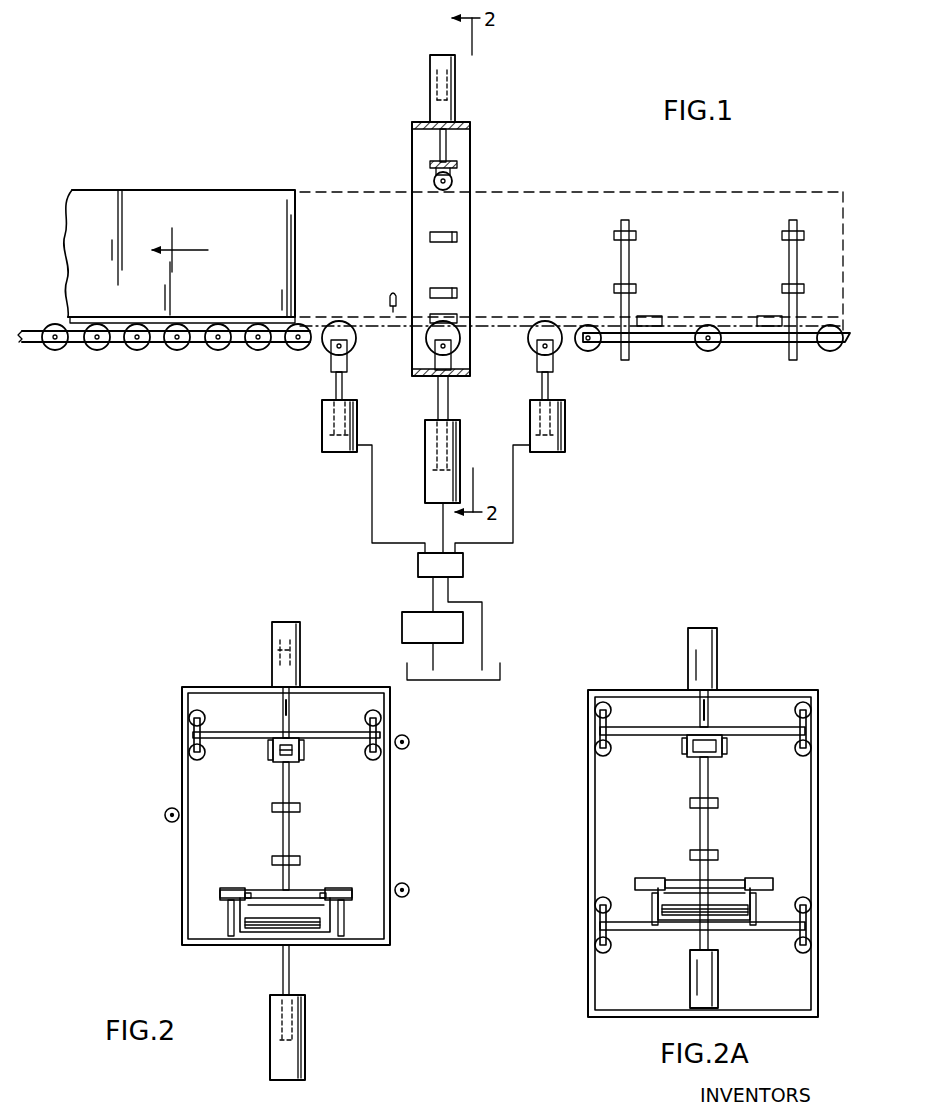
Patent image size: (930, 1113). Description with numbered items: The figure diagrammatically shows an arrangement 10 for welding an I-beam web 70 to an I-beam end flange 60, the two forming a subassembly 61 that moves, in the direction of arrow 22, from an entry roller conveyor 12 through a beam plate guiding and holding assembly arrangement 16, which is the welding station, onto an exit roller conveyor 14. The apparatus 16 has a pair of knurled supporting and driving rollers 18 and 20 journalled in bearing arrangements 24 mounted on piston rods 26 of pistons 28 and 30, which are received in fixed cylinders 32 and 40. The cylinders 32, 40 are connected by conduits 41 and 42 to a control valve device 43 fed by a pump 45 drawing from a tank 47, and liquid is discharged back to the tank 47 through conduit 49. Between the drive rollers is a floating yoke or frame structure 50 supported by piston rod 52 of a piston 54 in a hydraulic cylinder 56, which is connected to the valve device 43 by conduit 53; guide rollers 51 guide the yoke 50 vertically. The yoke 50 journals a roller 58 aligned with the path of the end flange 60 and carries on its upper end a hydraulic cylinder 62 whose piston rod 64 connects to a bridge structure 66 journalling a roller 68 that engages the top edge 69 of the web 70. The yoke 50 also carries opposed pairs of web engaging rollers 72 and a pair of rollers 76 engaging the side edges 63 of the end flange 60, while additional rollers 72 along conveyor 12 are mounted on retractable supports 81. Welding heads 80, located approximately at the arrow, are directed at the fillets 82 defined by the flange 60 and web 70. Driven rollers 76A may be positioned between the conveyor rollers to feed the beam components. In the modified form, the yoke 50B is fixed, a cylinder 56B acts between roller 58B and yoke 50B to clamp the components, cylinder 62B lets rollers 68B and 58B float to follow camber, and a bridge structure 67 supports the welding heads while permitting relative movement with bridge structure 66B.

In FIG. 1, the arrangement 10 is at (282, 462).
In FIG. 1, the entry roller conveyor 12 is at (779, 393).
In FIG. 1, the exit roller conveyor 14 is at (157, 362).
In FIG. 1, the beam plate guiding and holding assembly arrangement 16 is at (578, 152).
In FIG. 1, the knurled supporting and driving roller 18 is at (550, 320).
In FIG. 1, the knurled supporting and driving roller 20 is at (339, 320).
In FIG. 1, the arrow 22 is at (182, 250).
In FIG. 1, the bearing arrangement 24 is at (318, 350).
In FIG. 1, the piston rod 26 is at (334, 388).
In FIG. 1, the piston 28 is at (566, 436).
In FIG. 1, the piston 30 is at (320, 420).
In FIG. 1, the cylinder 32 is at (566, 448).
In FIG. 1, the cylinder 40 is at (334, 448).
In FIG. 1, the conduit 41 is at (513, 516).
In FIG. 1, the conduit 42 is at (372, 518).
In FIG. 1, the control valve device 43 is at (418, 566).
In FIG. 1, the pump 45 is at (402, 628).
In FIG. 1, the tank 47 is at (502, 672).
In FIG. 1, the conduit 49 is at (484, 618).
In FIG. 1, the floating yoke or frame structure 50 is at (486, 134).
In FIG. 2A, the yoke 50B is at (776, 690).
In FIG. 2, the guide roller 51 is at (412, 742).
In FIG. 1, the piston rod 52 is at (449, 404).
In FIG. 2, the piston rod 52 is at (290, 988).
In FIG. 1, the conduit 53 is at (440, 527).
In FIG. 1, the piston 54 is at (462, 460).
In FIG. 2, the piston 54 is at (306, 1025).
In FIG. 1, the hydraulic cylinder 56 is at (438, 481).
In FIG. 2, the hydraulic cylinder 56 is at (306, 1062).
In FIG. 2A, the cylinder 56B is at (718, 992).
In FIG. 1, the roller 58 is at (456, 330).
In FIG. 2, the roller 58 is at (262, 928).
In FIG. 2A, the roller 58B is at (680, 910).
In FIG. 1, the I-beam end flange 60 is at (245, 318).
In FIG. 2, the I-beam end flange 60 is at (308, 890).
In FIG. 1, the subassembly 61 is at (292, 205).
In FIG. 1, the hydraulic cylinder 62 is at (458, 72).
In FIG. 2, the hydraulic cylinder 62 is at (272, 634).
In FIG. 2A, the cylinder 62B is at (717, 642).
In FIG. 1, the side edge 63 is at (196, 318).
In FIG. 2, the side edge 63 is at (232, 905).
In FIG. 1, the piston rod 64 is at (446, 145).
In FIG. 2, the piston rod 64 is at (283, 708).
In FIG. 2A, the piston rod 64 is at (710, 712).
In FIG. 1, the bridge structure 66 is at (457, 164).
In FIG. 2, the bridge structure 66 is at (345, 740).
In FIG. 2A, the bridge structure 66B is at (660, 727).
In FIG. 2A, the bridge structure 67 is at (738, 930).
In FIG. 1, the roller 68 is at (452, 181).
In FIG. 2, the roller 68 is at (280, 762).
In FIG. 2A, the roller 68B is at (690, 754).
In FIG. 1, the top edge 69 is at (153, 190).
In FIG. 2, the top edge 69 is at (290, 745).
In FIG. 1, the I-beam web 70 is at (256, 205).
In FIG. 2, the I-beam web 70 is at (290, 790).
In FIG. 1, the web engaging roller 72 is at (634, 234).
In FIG. 2, the web engaging roller 72 is at (272, 807).
In FIG. 2A, the web engaging roller 72 is at (690, 803).
In FIG. 2, the roller 76 is at (222, 893).
In FIG. 2A, the roller 76 is at (652, 878).
In FIG. 1, the roller 76A is at (650, 318).
In FIG. 1, the welding heads 80 is at (393, 288).
In FIG. 1, the support 81 is at (630, 250).
In FIG. 2, the fillet 82 is at (262, 893).